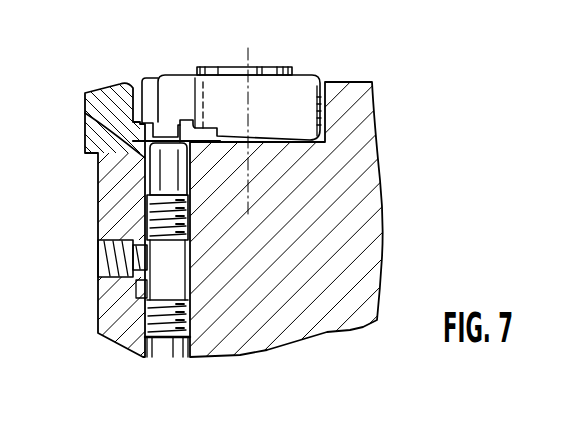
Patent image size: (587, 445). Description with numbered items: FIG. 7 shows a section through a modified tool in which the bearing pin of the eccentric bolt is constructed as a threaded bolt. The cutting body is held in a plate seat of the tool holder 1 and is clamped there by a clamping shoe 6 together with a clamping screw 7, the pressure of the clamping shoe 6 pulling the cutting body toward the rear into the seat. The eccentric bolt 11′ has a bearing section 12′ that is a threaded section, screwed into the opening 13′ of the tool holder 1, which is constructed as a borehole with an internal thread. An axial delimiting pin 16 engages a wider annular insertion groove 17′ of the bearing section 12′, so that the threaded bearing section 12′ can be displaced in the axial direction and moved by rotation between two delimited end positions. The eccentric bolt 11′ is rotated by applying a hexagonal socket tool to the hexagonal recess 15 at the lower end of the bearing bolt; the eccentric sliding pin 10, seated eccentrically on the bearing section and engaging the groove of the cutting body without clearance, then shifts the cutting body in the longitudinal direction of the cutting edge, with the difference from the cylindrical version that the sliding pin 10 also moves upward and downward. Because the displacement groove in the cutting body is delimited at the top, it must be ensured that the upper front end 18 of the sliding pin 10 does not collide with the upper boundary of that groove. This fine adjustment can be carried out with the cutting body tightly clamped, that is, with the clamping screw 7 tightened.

The tool holder 1 is at (367, 158).
The clamping shoe 6 is at (307, 83).
The clamping screw 7 is at (265, 66).
The eccentric sliding pin 10 is at (163, 172).
The eccentric bolt 11′ is at (145, 205).
The bearing section 12′ is at (193, 312).
The opening 13′ is at (148, 349).
The hexagonal recess 15 is at (172, 349).
The axial delimiting pin 16 is at (100, 257).
The annular insertion groove 17′ is at (145, 290).
The upper front end 18 is at (161, 78).